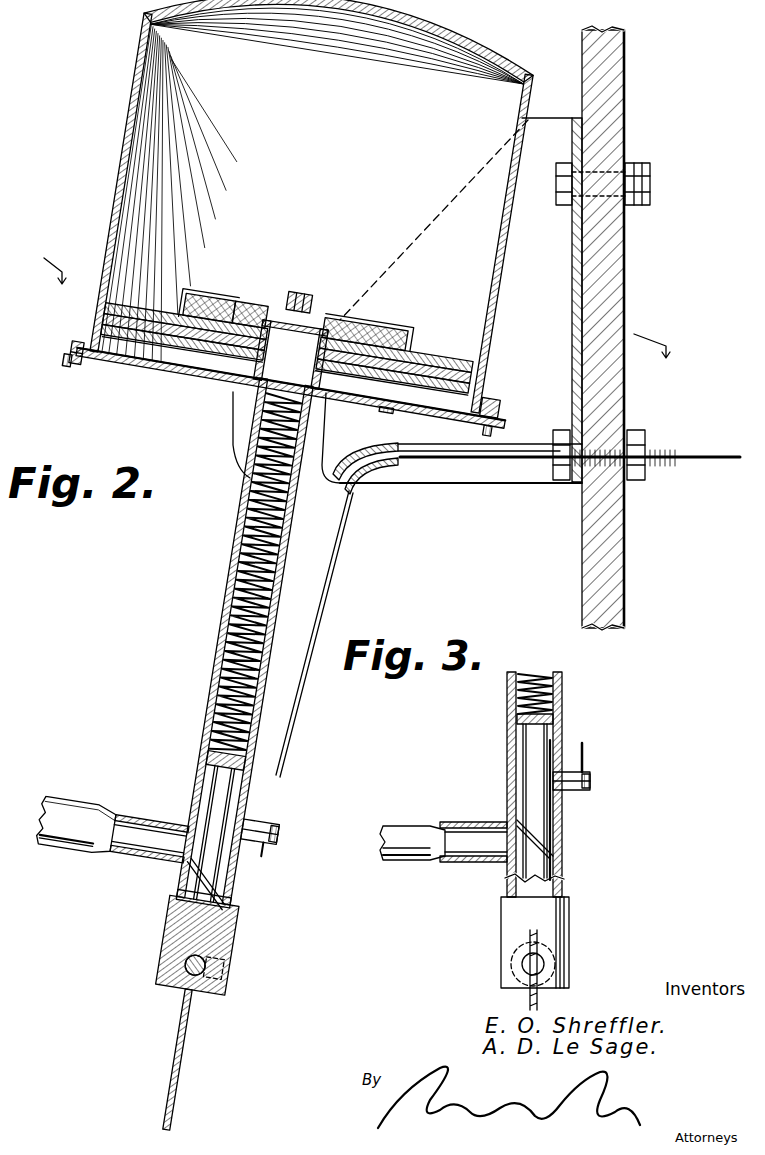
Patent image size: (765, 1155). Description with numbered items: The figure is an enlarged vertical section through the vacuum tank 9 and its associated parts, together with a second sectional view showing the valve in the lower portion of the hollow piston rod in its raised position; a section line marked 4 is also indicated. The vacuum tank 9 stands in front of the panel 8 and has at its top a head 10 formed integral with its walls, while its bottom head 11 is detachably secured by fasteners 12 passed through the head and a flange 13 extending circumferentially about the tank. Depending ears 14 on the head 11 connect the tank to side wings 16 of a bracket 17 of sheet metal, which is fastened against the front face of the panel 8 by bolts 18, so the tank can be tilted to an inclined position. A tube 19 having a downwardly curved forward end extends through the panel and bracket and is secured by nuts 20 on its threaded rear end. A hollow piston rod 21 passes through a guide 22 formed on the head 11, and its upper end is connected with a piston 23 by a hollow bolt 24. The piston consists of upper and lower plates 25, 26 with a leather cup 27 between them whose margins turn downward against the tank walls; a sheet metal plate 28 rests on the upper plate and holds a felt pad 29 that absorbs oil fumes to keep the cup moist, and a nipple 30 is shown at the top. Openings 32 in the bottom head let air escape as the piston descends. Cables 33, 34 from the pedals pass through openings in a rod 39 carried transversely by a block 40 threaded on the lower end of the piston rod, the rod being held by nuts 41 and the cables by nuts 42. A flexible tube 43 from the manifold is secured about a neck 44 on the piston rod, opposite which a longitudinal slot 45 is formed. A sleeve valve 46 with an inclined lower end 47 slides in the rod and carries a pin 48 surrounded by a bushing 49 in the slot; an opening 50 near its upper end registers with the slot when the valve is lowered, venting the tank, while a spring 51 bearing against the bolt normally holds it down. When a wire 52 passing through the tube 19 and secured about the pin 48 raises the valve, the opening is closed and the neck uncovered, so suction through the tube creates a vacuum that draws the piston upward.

In FIG. 2, the section line 4- 4 is at (355, 306).
In FIG. 2, the panel 8 is at (630, 98).
In FIG. 2, the vacuum tank 9 is at (132, 132).
In FIG. 2, the head 10 is at (482, 56).
In FIG. 2, the head 11 is at (178, 378).
In FIG. 2, the fasteners 12 is at (70, 348).
In FIG. 2, the flange 13 is at (56, 350).
In FIG. 2, the depending ears 14 is at (226, 448).
In FIG. 2, the side wings 16 is at (430, 480).
In FIG. 2, the bracket 17 is at (575, 258).
In FIG. 2, the bolts 18 is at (652, 185).
In FIG. 2, the tube 19 is at (512, 470).
In FIG. 2, the nuts 20 is at (557, 430).
In FIG. 2, the hollow piston rod 21 is at (228, 590).
In FIG. 3, the hollow piston rod 21 is at (510, 700).
In FIG. 2, the guide 22 is at (250, 398).
In FIG. 2, the piston 23 is at (120, 370).
In FIG. 2, the hollow screw or bolt 24 is at (330, 318).
In FIG. 2, the upper plate 25 is at (410, 350).
In FIG. 2, the lower plate 26 is at (440, 382).
In FIG. 2, the cup 27 is at (436, 366).
In FIG. 2, the sheet metal plate 28 is at (220, 300).
In FIG. 2, the pad 29 is at (246, 305).
In FIG. 2, the nipple 30 is at (290, 308).
In FIG. 2, the openings 32 is at (392, 413).
In FIG. 3, the cable 33 is at (540, 1000).
In FIG. 2, the cable 34 is at (190, 1038).
In FIG. 2, the rod 39 is at (166, 956).
In FIG. 3, the rod 39 is at (546, 960).
In FIG. 2, the block 40 is at (232, 934).
In FIG. 3, the block 40 is at (556, 918).
In FIG. 2, the nuts 41 is at (230, 968).
In FIG. 3, the nuts 42 is at (512, 958).
In FIG. 2, the flexible tube 43 is at (80, 808).
In FIG. 3, the flexible tube 43 is at (408, 826).
In FIG. 2, the neck 44 is at (140, 850).
In FIG. 3, the neck 44 is at (468, 850).
In FIG. 3, the slot 45 is at (556, 812).
In FIG. 2, the sleeve valve 46 is at (200, 800).
In FIG. 3, the sleeve valve 46 is at (530, 752).
In FIG. 2, the inclined lower end 47 is at (192, 880).
In FIG. 3, the inclined lower end 47 is at (560, 850).
In FIG. 2, the pin or screw 48 is at (262, 842).
In FIG. 3, the pin or screw 48 is at (592, 778).
In FIG. 2, the sleeve or bushing 49 is at (254, 840).
In FIG. 3, the sleeve or bushing 49 is at (588, 768).
In FIG. 2, the opening 50 is at (246, 777).
In FIG. 3, the opening 50 is at (552, 740).
In FIG. 2, the spring 51 is at (235, 652).
In FIG. 3, the spring 51 is at (560, 686).
In FIG. 2, the wire 52 is at (332, 570).